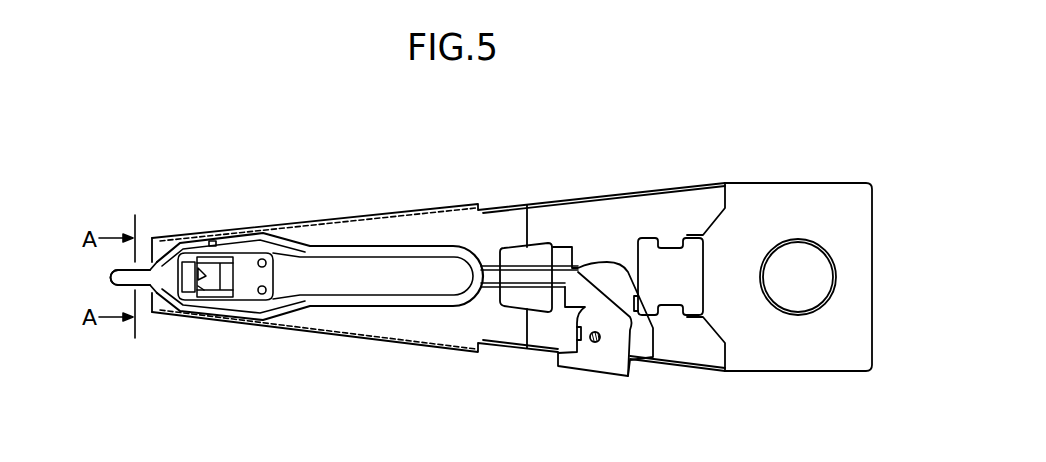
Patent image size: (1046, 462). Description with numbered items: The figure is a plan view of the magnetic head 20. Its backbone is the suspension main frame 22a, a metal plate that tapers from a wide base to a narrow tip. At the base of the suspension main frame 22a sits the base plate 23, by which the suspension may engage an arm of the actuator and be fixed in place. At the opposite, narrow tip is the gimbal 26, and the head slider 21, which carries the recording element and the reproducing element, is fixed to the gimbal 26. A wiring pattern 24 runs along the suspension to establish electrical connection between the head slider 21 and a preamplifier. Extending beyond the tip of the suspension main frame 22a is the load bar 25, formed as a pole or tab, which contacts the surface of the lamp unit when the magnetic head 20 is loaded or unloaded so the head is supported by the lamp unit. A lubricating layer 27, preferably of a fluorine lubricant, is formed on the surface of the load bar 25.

The magnetic head 20 is at (102, 137).
The head slider 21 is at (215, 268).
The suspension main frame 22a is at (421, 334).
The base plate 23 is at (786, 373).
The wiring pattern 24 is at (373, 240).
The load bar 25 is at (92, 277).
The gimbal 26 is at (275, 314).
The lubricating layer 27 is at (115, 278).